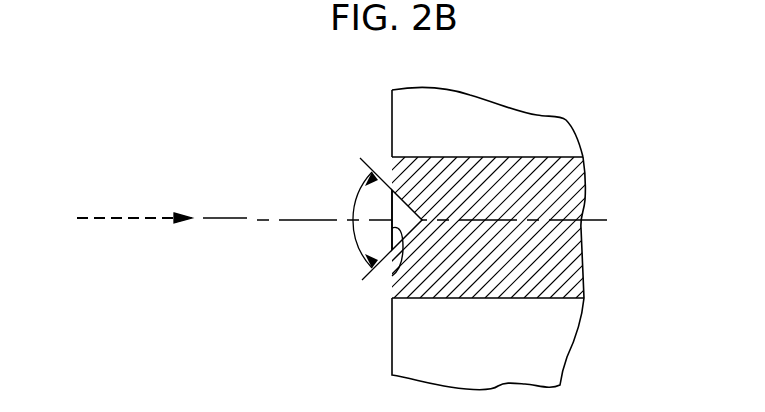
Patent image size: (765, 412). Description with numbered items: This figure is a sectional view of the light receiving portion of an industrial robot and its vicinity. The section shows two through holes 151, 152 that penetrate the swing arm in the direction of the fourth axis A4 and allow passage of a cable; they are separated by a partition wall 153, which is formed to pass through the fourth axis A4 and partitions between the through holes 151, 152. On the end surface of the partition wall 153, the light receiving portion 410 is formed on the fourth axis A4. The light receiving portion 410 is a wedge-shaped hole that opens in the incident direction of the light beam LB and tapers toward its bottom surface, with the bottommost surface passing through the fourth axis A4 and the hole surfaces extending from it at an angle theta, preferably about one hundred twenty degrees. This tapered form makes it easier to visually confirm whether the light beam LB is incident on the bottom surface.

The through hole 151 is at (416, 124).
The through hole 152 is at (413, 340).
The partition wall 153 is at (536, 159).
The light receiving portion 410 is at (392, 287).
The light beam LB is at (135, 216).
The fourth axis A4 is at (244, 216).